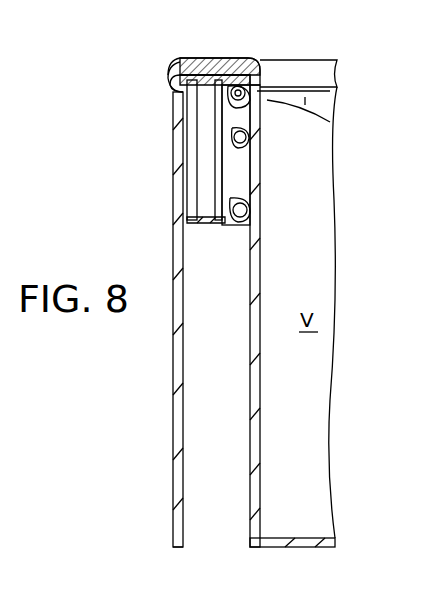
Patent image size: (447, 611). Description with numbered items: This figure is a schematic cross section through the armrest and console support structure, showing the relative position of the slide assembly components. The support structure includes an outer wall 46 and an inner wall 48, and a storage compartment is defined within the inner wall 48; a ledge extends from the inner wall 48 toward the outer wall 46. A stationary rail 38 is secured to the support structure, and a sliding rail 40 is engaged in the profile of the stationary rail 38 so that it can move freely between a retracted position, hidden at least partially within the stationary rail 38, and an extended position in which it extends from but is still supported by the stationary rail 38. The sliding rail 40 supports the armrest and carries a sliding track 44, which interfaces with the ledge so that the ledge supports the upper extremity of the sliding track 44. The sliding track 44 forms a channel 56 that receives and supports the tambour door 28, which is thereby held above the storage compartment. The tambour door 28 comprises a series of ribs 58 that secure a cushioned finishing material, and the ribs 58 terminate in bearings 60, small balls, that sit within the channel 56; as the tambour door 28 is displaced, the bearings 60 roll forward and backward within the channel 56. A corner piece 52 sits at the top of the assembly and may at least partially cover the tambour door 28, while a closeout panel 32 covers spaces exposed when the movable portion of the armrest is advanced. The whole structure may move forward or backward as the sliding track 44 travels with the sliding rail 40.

The tambour door 28 is at (290, 72).
The closeout panel 32 is at (183, 165).
The stationary rail 38 is at (222, 182).
The sliding rail 40 is at (215, 160).
The sliding track 44 is at (212, 193).
The outer wall 46 is at (173, 527).
The inner wall 48 is at (250, 500).
The corner piece 52 is at (175, 73).
The channel 56 is at (220, 77).
The ribs 58 is at (330, 122).
The bearings 60 is at (238, 75).